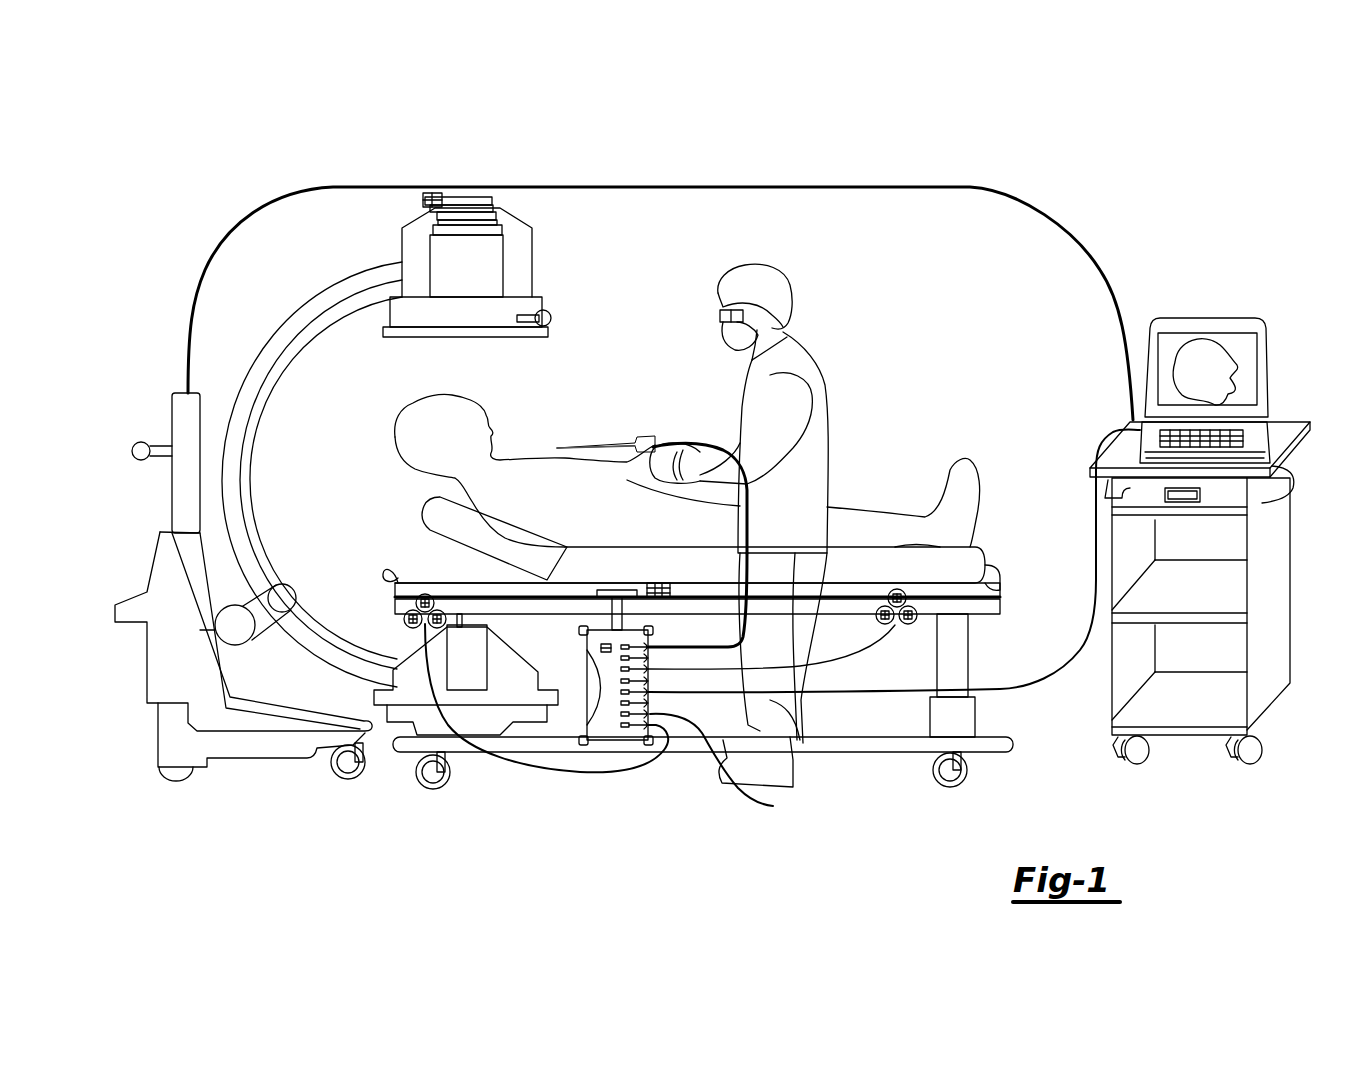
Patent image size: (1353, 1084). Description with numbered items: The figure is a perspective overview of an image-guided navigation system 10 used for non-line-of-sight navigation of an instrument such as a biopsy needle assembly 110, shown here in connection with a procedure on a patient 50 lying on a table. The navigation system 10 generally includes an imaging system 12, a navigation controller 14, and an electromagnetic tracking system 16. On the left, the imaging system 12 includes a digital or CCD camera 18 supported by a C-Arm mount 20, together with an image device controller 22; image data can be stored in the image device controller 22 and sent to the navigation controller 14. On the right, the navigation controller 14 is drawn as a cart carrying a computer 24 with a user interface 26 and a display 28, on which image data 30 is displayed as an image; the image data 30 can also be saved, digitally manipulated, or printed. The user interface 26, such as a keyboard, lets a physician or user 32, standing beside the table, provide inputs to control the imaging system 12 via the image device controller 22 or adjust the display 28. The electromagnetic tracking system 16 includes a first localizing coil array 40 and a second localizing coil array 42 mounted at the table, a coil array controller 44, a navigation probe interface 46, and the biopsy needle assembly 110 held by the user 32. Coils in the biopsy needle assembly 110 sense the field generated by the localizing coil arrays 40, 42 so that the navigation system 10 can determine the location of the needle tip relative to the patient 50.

The image-guided navigation system 10 is at (1032, 163).
The imaging system 12 is at (379, 245).
The navigation controller 14 is at (1262, 320).
The electromagnetic tracking system 16 is at (553, 784).
The camera 18 is at (528, 271).
The C-Arm mount 20 is at (285, 322).
The image device controller 22 is at (182, 398).
The computer 24 is at (1150, 328).
The user interface 26 is at (1262, 437).
The display 28 is at (1268, 373).
The image data 30 is at (1203, 350).
The user 32 is at (812, 370).
The first localizing coil array 40 is at (412, 617).
The second localizing coil array 42 is at (910, 626).
The coil array controller 44 is at (610, 733).
The navigation probe interface 46 is at (728, 768).
The patient 50 is at (544, 447).
The biopsy needle assembly 110 is at (645, 432).